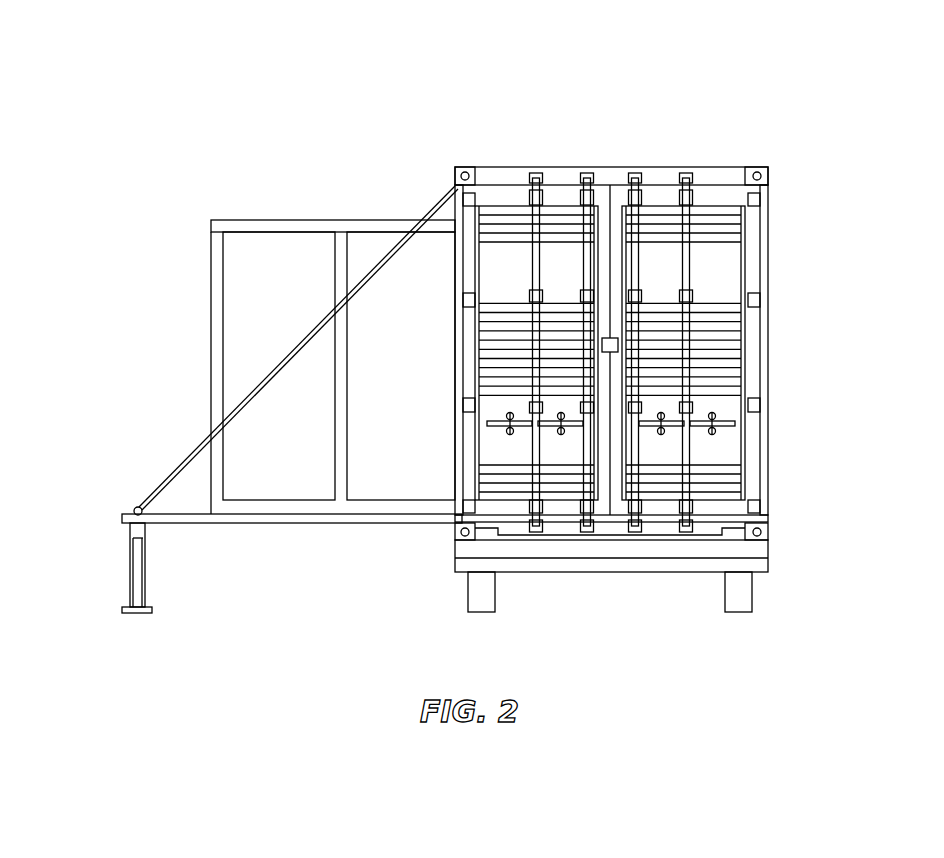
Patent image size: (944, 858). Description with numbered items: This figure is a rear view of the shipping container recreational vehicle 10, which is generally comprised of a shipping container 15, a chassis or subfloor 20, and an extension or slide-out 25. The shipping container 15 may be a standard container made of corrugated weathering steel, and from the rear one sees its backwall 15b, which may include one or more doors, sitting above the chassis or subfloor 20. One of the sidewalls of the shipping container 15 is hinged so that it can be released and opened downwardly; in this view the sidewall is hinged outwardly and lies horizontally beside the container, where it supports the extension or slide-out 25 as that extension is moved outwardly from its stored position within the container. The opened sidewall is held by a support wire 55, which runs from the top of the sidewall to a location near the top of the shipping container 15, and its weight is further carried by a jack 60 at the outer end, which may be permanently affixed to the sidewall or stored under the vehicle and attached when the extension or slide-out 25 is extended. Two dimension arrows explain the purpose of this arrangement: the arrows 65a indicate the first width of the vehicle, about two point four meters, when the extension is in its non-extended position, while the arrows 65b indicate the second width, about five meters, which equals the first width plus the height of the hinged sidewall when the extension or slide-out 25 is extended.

The shipping container recreational vehicle 10 is at (148, 223).
The shipping container 15 is at (770, 447).
The backwall 15b is at (726, 268).
The chassis or subfloor 20 is at (762, 566).
The extension or slide-out 25 is at (312, 527).
The support wire 55 is at (174, 470).
The jack 60 is at (130, 568).
The first width 65a is at (453, 160).
The second width 65b is at (122, 157).